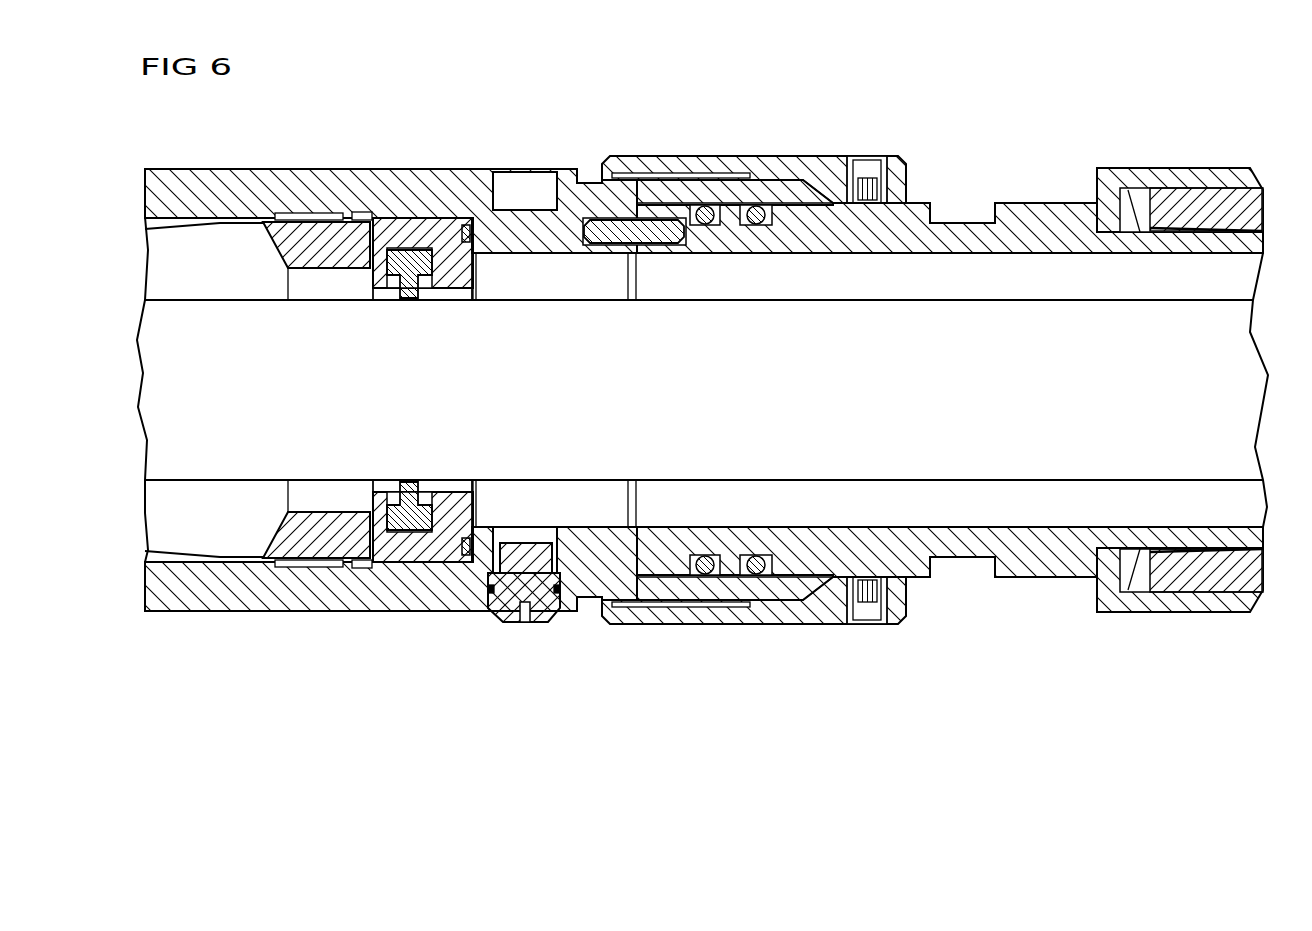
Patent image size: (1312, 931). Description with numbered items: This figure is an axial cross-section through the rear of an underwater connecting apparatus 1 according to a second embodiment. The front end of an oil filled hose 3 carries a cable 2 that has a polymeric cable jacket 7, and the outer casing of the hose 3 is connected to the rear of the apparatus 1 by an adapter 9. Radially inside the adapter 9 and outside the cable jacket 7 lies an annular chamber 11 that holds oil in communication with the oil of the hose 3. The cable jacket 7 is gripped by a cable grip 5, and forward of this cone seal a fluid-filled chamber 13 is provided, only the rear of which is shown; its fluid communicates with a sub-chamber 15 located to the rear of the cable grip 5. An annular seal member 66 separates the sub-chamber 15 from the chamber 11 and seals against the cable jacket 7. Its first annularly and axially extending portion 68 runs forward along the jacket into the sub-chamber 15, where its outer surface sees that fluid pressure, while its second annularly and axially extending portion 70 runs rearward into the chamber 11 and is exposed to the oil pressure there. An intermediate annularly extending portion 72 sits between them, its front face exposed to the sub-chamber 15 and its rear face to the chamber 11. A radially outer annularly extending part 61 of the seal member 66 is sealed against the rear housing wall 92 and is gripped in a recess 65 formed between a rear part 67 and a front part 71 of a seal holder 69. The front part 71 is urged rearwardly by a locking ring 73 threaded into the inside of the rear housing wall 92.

The underwater connecting apparatus 1 is at (680, 116).
The cable 2 is at (1245, 416).
The oil filled hose 3 is at (1250, 568).
The cable grip 5 is at (218, 490).
The cable jacket 7 is at (1252, 357).
The adapter 9 is at (1055, 212).
The annular chamber 11 is at (1035, 512).
The chamber 13 is at (167, 226).
The sub-chamber 15 is at (298, 288).
The radially outer annularly extending part 61 is at (410, 530).
The recess 65 is at (424, 530).
The annular seal member 66 is at (424, 526).
The rear part of seal holder 67 is at (472, 270).
The first annularly and axially extending portion 68 is at (390, 295).
The seal holder 69 is at (411, 242).
The second annularly and axially extending portion 70 is at (439, 302).
The front part of seal holder 71 is at (395, 228).
The intermediate annularly extending portion 72 is at (410, 295).
The locking ring 73 is at (325, 548).
The rear housing wall 92 is at (258, 180).